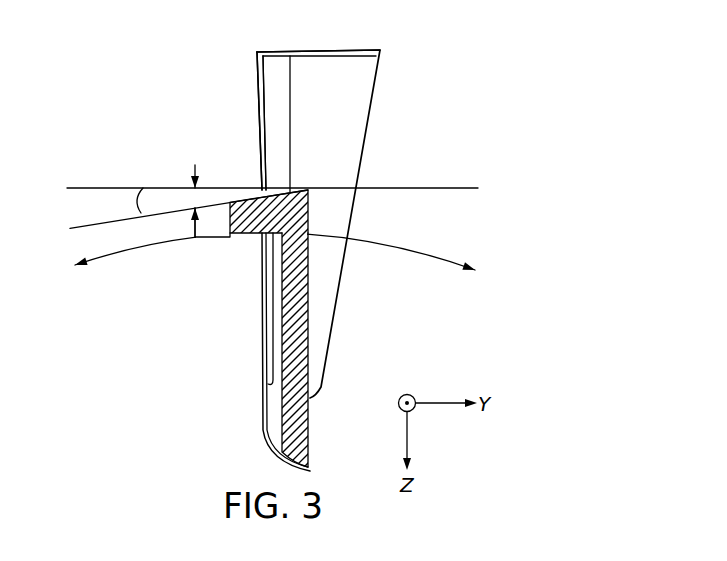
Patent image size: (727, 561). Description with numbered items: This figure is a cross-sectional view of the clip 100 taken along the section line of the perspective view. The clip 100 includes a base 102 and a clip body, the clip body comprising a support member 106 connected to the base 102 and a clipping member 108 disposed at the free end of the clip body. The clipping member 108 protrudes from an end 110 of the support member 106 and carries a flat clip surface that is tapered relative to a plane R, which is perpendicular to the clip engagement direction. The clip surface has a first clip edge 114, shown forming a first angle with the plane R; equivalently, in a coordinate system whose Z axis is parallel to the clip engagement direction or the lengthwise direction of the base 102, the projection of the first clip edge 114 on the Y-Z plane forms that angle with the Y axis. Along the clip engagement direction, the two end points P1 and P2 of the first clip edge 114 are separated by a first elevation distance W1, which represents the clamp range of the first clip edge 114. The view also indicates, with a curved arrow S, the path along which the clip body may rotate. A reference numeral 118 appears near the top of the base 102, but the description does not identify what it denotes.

The clip 100 is at (314, 260).
The base 102 is at (383, 119).
The support member 106 is at (302, 354).
The clipping member 108 is at (233, 237).
The end of the support member 110 is at (308, 218).
The first clip edge 114 is at (250, 189).
The top edge 118 is at (354, 67).
The end point of the first clip edge P1 is at (295, 190).
The end point of the first clip edge P2 is at (188, 208).
The first elevation distance W1 is at (198, 190).
The plane R is at (447, 188).
The rotation path S is at (428, 252).